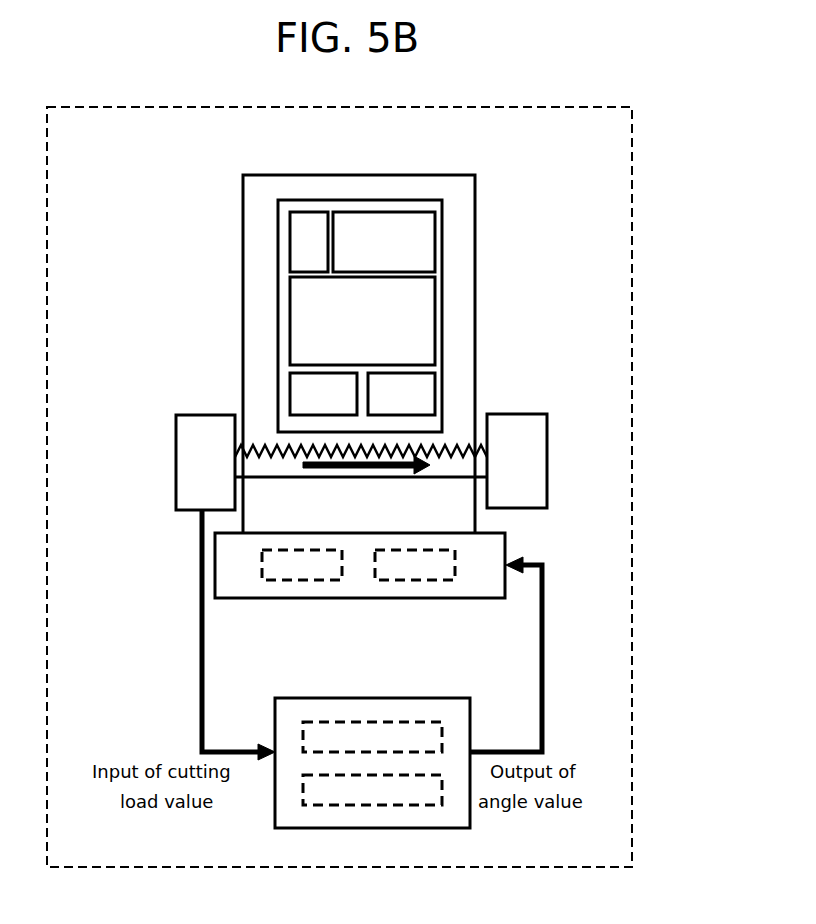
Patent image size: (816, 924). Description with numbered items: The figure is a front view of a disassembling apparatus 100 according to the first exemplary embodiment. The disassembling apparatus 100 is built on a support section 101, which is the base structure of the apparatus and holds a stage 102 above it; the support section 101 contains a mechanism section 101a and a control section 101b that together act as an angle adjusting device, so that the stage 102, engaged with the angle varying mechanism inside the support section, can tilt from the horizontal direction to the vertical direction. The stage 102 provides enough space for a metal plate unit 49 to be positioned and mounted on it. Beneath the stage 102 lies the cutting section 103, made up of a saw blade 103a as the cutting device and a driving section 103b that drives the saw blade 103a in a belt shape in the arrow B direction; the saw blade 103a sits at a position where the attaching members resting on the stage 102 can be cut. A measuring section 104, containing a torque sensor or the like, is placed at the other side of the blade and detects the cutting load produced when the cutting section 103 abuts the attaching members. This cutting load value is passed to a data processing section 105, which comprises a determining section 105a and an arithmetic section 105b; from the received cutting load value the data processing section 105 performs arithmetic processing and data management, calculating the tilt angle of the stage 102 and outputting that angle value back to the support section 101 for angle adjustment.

The disassembling apparatus 100 is at (728, 771).
The stage 102 is at (463, 230).
The metal plate unit 49 is at (287, 242).
The measuring section 104 is at (203, 428).
The cutting section 103 is at (517, 382).
The saw blade 103a is at (442, 450).
The driving section 103b is at (523, 423).
The arrow B direction B is at (303, 473).
The support section 101 is at (360, 599).
The mechanism section 101a is at (278, 573).
The control section 101b is at (417, 573).
The data processing section 105 is at (368, 759).
The determining section 105a is at (352, 720).
The arithmetic section 105b is at (338, 797).